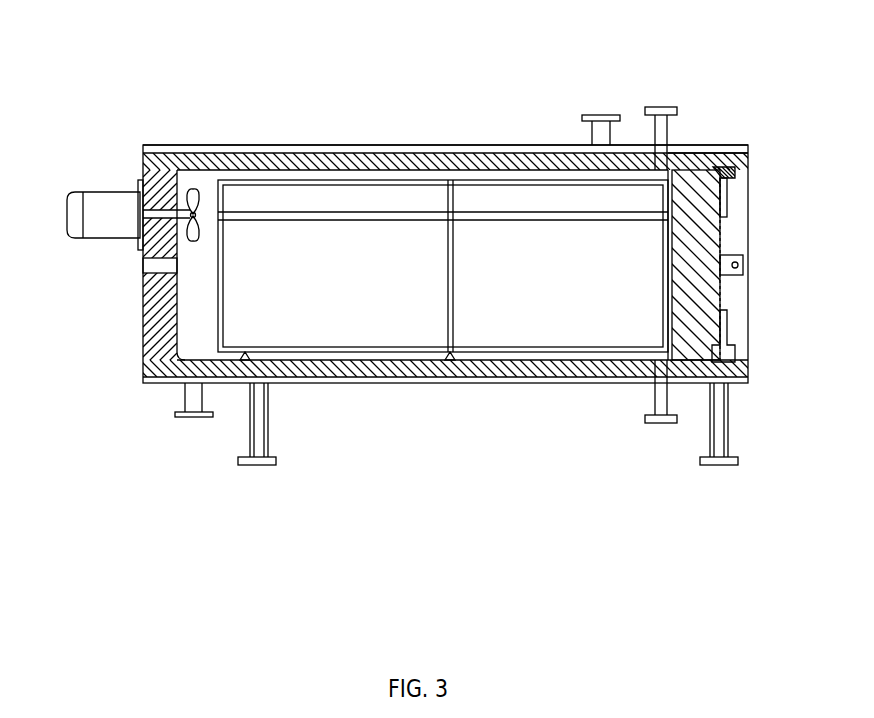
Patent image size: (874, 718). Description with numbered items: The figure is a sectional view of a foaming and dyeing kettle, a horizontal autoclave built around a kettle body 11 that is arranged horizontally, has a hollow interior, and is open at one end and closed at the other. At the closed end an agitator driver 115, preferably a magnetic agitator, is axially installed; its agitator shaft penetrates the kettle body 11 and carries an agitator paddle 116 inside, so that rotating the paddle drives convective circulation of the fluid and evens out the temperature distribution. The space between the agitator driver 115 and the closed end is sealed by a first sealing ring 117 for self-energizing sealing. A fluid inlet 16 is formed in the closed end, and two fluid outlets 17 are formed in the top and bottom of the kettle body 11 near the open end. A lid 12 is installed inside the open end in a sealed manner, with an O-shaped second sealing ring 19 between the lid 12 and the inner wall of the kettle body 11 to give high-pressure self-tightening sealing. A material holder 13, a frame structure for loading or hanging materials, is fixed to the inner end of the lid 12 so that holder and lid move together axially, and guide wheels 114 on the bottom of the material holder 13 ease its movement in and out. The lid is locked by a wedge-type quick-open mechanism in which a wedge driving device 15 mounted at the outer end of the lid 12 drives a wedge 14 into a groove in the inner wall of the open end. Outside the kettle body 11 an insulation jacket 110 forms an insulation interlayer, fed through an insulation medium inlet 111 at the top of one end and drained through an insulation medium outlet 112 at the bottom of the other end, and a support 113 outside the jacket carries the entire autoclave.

The kettle body 11 is at (338, 165).
The insulation jacket 110 is at (283, 145).
The insulation medium inlet 111 is at (604, 118).
The insulation medium outlet 112 is at (185, 410).
The support 113 is at (255, 457).
The guide wheels 114 is at (450, 357).
The agitator driver 115 is at (107, 208).
The agitator paddle 116 is at (192, 188).
The first sealing ring 117 is at (140, 186).
The lid 12 is at (710, 300).
The material holder 13 is at (552, 345).
The wedge 14 is at (735, 167).
The wedge driving device 15 is at (727, 208).
The fluid inlet 16 is at (150, 265).
The fluid outlets 17 is at (661, 107).
The second sealing ring 19 is at (697, 167).